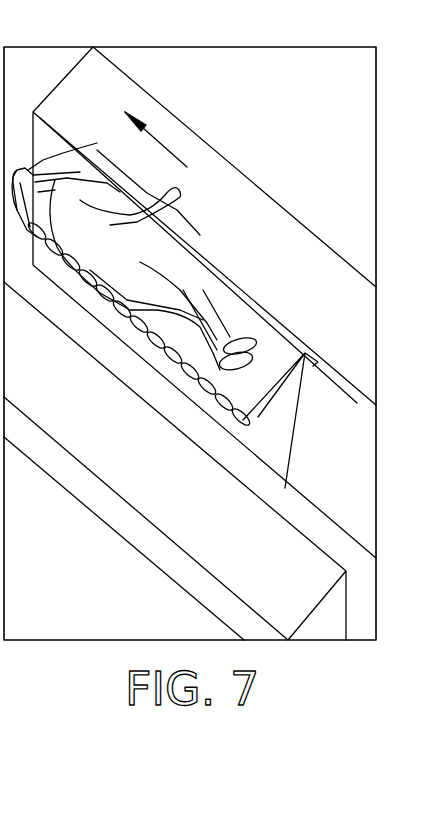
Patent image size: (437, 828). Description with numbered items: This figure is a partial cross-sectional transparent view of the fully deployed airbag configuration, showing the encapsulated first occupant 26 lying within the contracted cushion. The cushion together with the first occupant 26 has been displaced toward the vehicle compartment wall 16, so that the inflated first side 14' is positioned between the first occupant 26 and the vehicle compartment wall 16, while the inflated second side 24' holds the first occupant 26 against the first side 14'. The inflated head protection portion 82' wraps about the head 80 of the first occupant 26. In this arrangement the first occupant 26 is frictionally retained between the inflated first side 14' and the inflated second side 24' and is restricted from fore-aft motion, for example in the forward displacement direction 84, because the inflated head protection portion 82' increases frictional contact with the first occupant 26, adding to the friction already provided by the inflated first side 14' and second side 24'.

The vehicle compartment wall 16 is at (343, 442).
The second side 24' is at (198, 260).
The first side 14' is at (294, 420).
The forward displacement direction 84 is at (163, 143).
The first occupant 26 is at (160, 257).
The head 80 is at (47, 173).
The head protection portion 82' is at (63, 154).